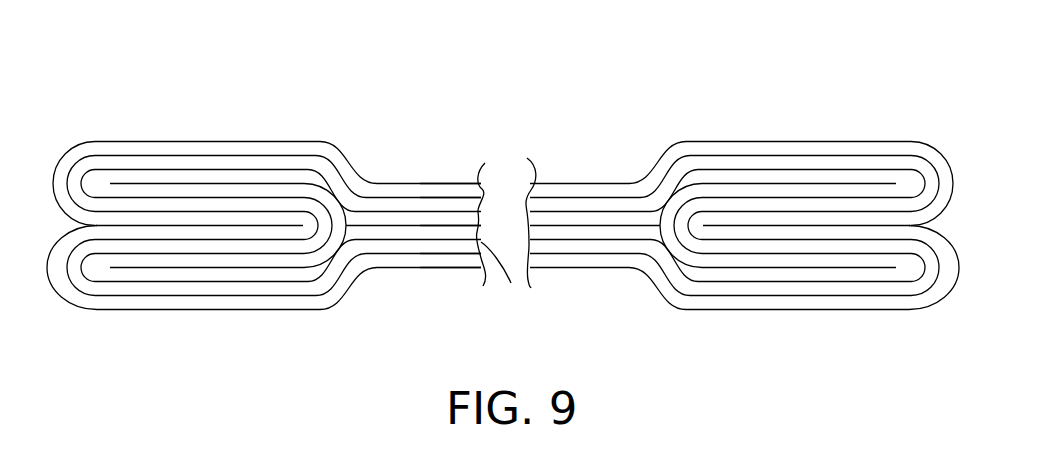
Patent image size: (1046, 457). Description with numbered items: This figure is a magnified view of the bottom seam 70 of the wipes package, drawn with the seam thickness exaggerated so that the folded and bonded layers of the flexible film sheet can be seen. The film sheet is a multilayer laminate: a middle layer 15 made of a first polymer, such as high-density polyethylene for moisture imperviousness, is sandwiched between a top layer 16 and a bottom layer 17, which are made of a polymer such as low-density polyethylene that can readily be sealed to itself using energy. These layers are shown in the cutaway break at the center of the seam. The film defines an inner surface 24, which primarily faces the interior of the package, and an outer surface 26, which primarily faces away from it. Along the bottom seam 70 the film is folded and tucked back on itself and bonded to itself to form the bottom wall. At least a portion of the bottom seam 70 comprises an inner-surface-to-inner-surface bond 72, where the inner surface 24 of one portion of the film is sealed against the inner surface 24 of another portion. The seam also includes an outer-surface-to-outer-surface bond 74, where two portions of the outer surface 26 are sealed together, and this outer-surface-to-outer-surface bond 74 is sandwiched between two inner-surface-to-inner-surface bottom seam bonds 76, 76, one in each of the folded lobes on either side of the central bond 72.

The bottom seam 70 is at (385, 104).
The inner-surface-to-inner-surface bond 72 is at (419, 224).
The inner surface 24 is at (283, 183).
The outer surface 26 is at (99, 141).
The inner-surface-to-inner-surface bottom seam bond 76 is at (198, 183).
The outer-surface-to-outer-surface bond 74 is at (56, 306).
The middle layer 15 is at (481, 203).
The top layer 16 is at (486, 163).
The bottom layer 17 is at (480, 228).